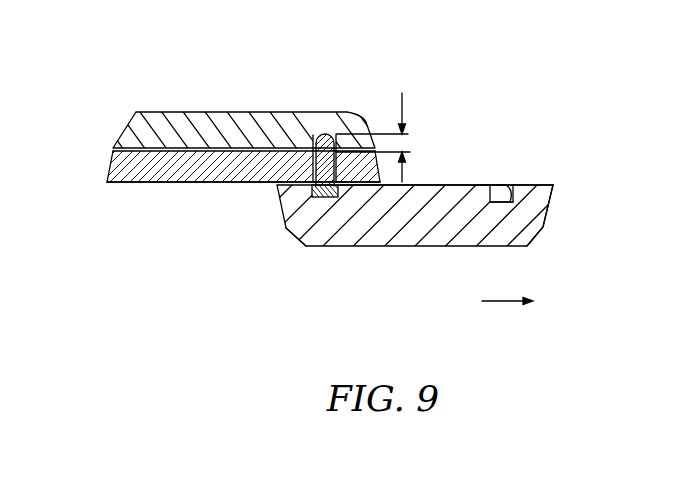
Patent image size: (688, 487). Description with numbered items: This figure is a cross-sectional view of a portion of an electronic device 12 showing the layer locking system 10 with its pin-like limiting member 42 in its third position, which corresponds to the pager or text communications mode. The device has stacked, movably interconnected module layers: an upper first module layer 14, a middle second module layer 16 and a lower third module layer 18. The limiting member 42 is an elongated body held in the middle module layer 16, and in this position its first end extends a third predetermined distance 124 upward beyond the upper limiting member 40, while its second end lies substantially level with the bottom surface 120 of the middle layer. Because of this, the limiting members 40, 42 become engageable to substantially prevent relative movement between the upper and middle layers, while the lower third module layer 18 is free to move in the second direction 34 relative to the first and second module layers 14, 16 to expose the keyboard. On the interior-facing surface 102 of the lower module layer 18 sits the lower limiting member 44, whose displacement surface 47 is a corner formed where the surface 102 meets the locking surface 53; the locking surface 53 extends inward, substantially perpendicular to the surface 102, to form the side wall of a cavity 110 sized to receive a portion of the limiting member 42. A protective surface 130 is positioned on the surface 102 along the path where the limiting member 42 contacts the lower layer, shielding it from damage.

The electronic device 12 is at (410, 44).
The first module layer 14 is at (133, 121).
The second module layer 16 is at (114, 168).
The bottom surface 120 is at (186, 193).
The limiting member 42 is at (301, 128).
The limiting member 40 is at (330, 123).
The third predetermined distance 124 is at (403, 106).
The layer locking system 10 is at (280, 200).
The third module layer 18 is at (311, 247).
The protective surface 130 is at (331, 197).
The interior-facing surface 102 is at (433, 176).
The displacement surface 47 is at (498, 176).
The locking surface 53 is at (508, 186).
The cavity 110 is at (496, 213).
The limiting member 44 is at (523, 213).
The second direction 34 is at (492, 301).